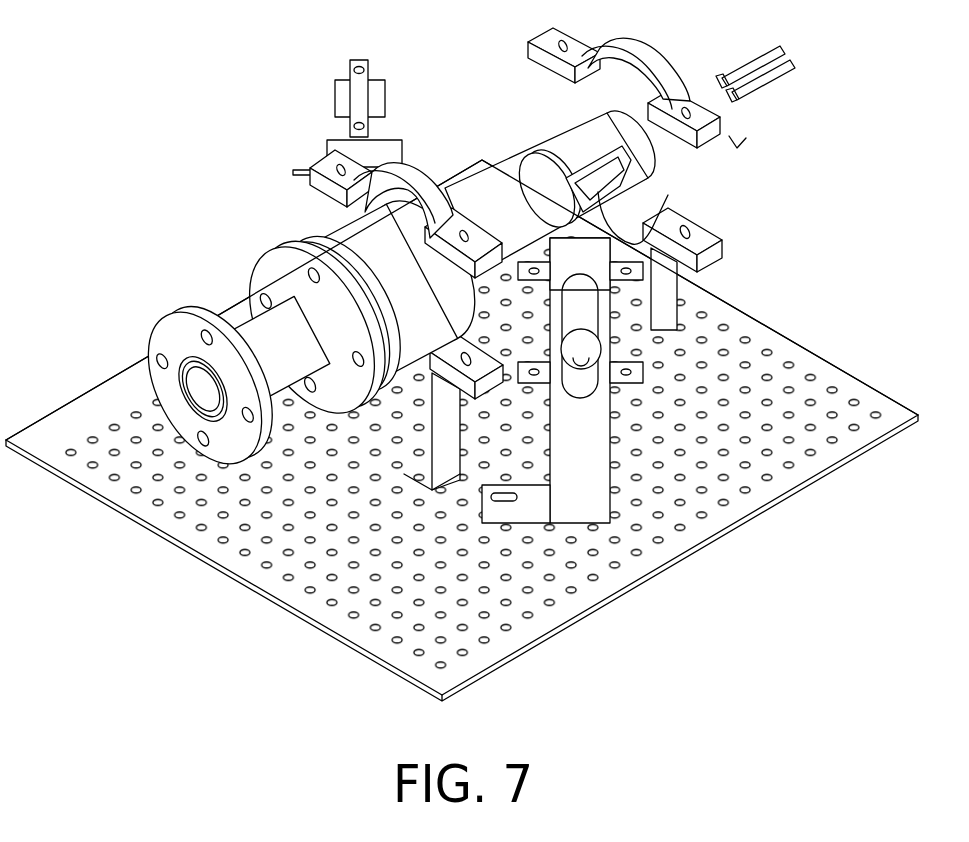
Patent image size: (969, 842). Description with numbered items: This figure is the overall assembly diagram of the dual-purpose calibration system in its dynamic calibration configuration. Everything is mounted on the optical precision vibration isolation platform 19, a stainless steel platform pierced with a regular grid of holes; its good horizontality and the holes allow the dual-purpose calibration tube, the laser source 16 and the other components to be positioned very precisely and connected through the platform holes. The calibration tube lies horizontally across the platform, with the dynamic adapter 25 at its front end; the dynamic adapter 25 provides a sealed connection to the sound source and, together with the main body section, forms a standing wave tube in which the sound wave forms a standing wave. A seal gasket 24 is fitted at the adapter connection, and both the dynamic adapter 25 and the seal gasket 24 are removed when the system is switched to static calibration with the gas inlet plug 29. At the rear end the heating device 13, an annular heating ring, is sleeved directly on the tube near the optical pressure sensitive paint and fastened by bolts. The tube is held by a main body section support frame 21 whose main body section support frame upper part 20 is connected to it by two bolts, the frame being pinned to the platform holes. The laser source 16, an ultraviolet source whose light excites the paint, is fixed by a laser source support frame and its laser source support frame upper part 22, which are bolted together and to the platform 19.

The heating device 13 is at (737, 148).
The laser source 16 is at (570, 333).
The optical precision vibration isolation platform 19 is at (845, 448).
The main body section support frame upper part 20 is at (685, 130).
The main body section support frame 21 is at (650, 248).
The laser source support frame upper part 22 is at (602, 277).
The seal gasket 24 is at (392, 360).
The dynamic adapter 25 is at (275, 363).
The gas inlet plug 29 is at (492, 523).